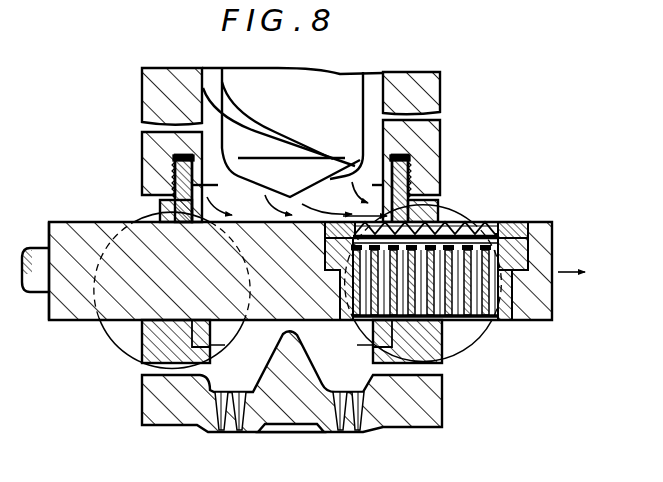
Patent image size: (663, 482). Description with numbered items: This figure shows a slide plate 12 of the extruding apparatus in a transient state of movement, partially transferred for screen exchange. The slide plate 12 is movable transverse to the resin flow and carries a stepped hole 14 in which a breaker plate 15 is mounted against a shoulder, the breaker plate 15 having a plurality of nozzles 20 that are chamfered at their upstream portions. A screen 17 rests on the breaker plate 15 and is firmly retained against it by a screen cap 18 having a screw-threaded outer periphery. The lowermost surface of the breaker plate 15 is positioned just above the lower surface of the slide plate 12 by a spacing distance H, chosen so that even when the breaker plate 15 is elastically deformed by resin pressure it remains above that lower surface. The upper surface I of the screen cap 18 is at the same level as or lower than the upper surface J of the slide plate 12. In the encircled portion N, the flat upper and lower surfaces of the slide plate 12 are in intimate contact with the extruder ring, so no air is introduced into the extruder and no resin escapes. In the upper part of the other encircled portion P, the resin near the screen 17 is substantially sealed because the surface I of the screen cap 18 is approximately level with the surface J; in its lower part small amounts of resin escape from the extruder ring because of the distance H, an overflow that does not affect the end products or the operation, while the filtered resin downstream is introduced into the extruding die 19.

The slide plate 12 is at (537, 313).
The stepped hole 14 is at (508, 305).
The breaker plate 15 is at (520, 260).
The screen 17 is at (490, 222).
The screen cap 18 is at (521, 222).
The extruding die 19 is at (327, 428).
The nozzle 20 is at (472, 307).
The spacing distance H is at (495, 316).
The upper surface of screen cap I is at (485, 222).
The upper surface of slide plate J is at (97, 221).
The encircled portion N is at (171, 290).
The encircled portion P is at (442, 353).